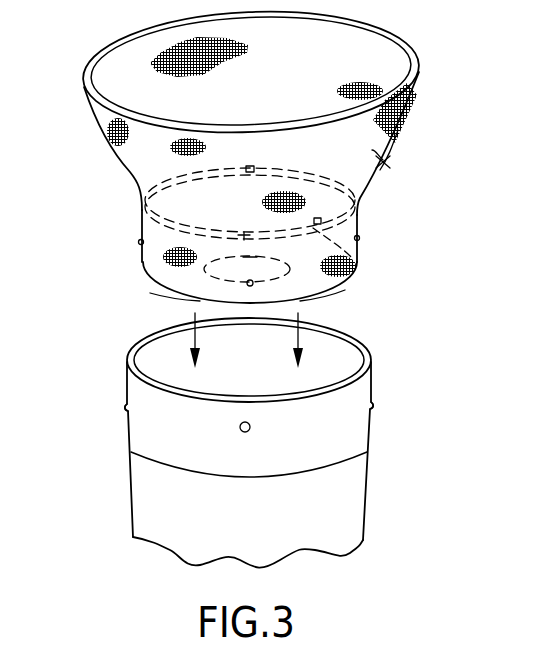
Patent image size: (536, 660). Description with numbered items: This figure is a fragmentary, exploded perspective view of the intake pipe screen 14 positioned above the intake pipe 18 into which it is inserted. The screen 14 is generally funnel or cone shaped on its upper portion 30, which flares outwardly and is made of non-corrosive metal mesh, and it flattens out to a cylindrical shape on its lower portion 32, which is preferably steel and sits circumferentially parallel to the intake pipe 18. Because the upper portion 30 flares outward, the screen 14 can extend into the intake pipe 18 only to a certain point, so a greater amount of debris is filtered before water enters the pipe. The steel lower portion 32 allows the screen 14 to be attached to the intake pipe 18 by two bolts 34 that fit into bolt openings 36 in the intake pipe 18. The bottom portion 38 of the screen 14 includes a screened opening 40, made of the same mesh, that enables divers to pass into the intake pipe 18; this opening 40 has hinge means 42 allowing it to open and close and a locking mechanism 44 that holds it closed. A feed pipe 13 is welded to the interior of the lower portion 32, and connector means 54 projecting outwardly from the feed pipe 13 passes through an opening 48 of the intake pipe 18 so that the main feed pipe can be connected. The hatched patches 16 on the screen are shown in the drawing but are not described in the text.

The feed pipe 13 is at (215, 170).
The intake pipe screen 14 is at (412, 123).
The food residue patches 16 is at (327, 180).
The intake pipe 18 is at (172, 450).
The upper portion 30 is at (383, 162).
The lower portion 32 is at (345, 246).
The bolts 34 is at (138, 243).
The bolt openings 36 is at (126, 409).
The bottom portion 38 is at (340, 299).
The screened opening 40 is at (165, 293).
The hinge means 42 is at (257, 257).
The locking mechanism 44 is at (250, 286).
The opening 48 is at (249, 431).
The connector means 54 is at (253, 230).